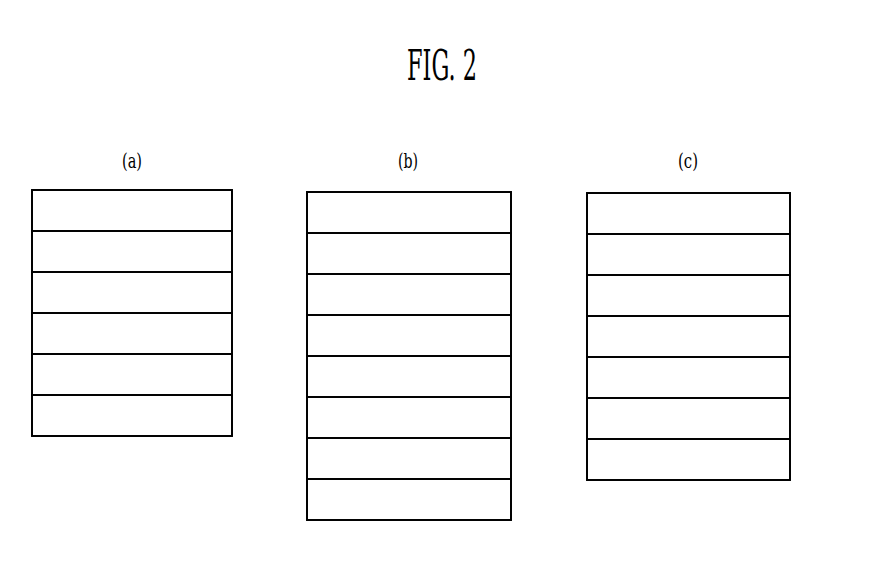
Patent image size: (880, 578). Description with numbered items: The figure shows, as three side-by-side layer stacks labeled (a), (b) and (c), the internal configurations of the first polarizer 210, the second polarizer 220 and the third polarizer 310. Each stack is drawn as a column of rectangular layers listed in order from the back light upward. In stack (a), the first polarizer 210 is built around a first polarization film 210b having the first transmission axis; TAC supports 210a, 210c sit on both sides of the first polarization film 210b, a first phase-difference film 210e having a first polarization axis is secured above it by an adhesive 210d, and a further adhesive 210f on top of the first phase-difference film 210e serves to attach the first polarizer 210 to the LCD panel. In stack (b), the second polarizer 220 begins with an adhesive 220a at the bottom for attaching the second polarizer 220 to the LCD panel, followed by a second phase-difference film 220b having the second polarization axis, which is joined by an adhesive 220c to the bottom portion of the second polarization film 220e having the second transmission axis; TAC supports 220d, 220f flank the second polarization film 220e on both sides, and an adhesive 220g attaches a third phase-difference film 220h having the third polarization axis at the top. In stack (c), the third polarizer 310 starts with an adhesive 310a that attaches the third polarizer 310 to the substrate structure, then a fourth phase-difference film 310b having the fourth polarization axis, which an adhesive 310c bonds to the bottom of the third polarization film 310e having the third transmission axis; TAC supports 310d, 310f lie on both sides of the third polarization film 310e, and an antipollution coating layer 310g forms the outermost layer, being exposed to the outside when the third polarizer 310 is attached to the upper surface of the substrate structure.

The first polarizer 210 is at (194, 183).
The support 210a is at (232, 413).
The first polarization film 210b is at (232, 372).
The support 210c is at (232, 331).
The adhesive 210d is at (232, 290).
The first phase-difference film 210e is at (232, 249).
The adhesive 210f is at (232, 208).
The second polarizer 220 is at (472, 183).
The adhesive 220a is at (511, 497).
The second phase-difference film 220b is at (511, 456).
The adhesive 220c is at (511, 415).
The support 220d is at (511, 374).
The second polarization film 220e is at (511, 333).
The support 220f is at (511, 292).
The adhesive 220g is at (511, 251).
The third phase-difference film 220h is at (511, 210).
The third polarizer 310 is at (756, 183).
The adhesive 310a is at (790, 457).
The fourth phase-difference film 310b is at (790, 416).
The adhesive 310c is at (790, 375).
The support 310d is at (790, 334).
The third polarization film 310e is at (790, 293).
The support 310f is at (790, 252).
The antipollution coating layer 310g is at (790, 211).